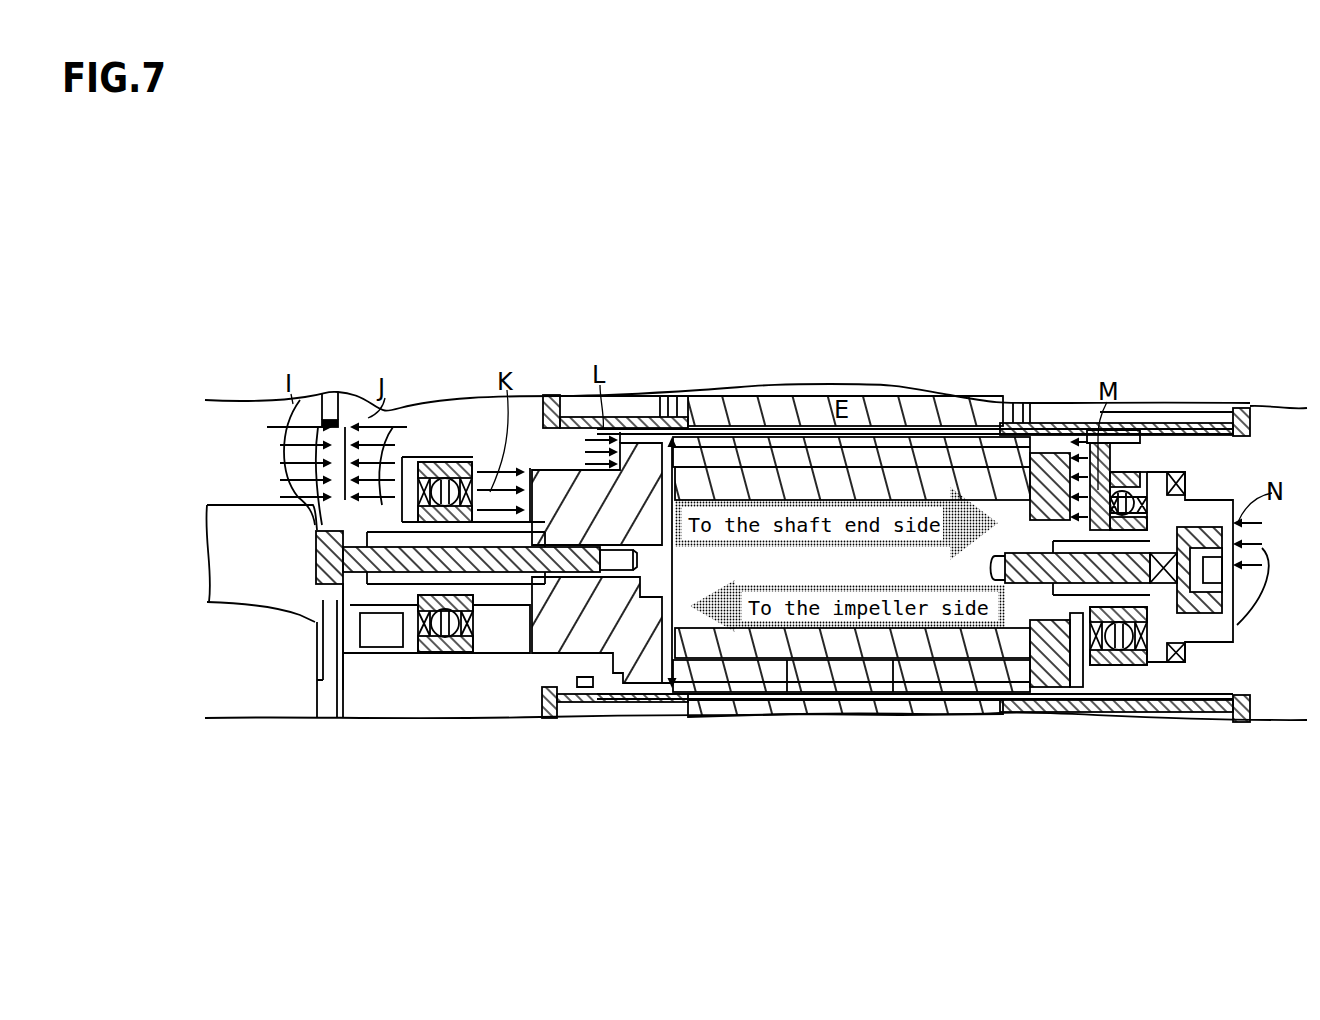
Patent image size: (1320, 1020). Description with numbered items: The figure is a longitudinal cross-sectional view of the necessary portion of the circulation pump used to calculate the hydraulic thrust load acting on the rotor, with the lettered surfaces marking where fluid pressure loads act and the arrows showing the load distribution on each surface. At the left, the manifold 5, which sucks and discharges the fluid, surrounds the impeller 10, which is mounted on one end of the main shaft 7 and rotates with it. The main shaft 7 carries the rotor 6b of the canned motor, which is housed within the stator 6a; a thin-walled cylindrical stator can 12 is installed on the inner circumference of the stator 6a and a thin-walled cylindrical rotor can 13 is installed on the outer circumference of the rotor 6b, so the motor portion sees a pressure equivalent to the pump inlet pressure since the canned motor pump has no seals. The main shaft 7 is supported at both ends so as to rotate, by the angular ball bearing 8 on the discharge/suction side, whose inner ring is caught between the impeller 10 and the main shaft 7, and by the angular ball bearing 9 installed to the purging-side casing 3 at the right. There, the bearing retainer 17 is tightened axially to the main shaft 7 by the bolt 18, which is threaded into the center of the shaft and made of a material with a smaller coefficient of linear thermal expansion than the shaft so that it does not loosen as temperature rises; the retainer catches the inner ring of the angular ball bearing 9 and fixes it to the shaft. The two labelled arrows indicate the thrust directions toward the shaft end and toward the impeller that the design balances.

The purging-side casing 3 is at (1275, 418).
The manifold 5 is at (273, 680).
The stator 6a is at (793, 705).
The rotor 6b is at (947, 660).
The main shaft 7 is at (550, 627).
The angular ball bearing 8 is at (432, 462).
The angular ball bearing 9 is at (1142, 473).
The impeller 10 is at (333, 595).
The stator can 12 is at (943, 438).
The rotor can 13 is at (950, 447).
The bearing retainer 17 is at (1203, 595).
The bolt 18 is at (1223, 593).